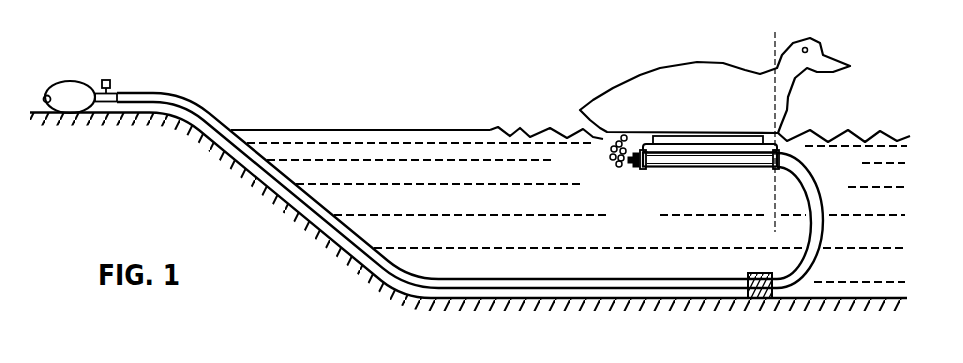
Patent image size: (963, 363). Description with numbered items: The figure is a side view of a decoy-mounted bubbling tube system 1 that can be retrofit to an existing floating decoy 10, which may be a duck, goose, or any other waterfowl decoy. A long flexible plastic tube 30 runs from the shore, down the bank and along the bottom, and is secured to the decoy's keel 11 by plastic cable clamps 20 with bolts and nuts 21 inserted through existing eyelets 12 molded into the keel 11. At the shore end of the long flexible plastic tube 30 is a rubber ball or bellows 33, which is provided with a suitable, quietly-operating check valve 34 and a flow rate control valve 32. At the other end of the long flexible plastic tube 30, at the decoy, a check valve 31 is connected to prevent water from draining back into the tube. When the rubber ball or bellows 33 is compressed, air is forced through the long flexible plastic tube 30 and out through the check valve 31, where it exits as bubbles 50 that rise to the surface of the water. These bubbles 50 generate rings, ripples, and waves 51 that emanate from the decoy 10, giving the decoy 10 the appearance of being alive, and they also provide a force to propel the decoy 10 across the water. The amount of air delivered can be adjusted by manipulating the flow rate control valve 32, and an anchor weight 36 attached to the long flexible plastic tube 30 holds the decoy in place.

The bubbling tube system 1 is at (220, 93).
The floating decoy 10 is at (665, 67).
The keel 11 is at (780, 148).
The eyelets 12 is at (781, 158).
The plastic cable clamps 20 is at (643, 168).
The bolts and nuts 21 is at (646, 153).
The long flexible plastic tube 30 is at (143, 95).
The check valve 31 is at (631, 170).
The flow rate control valve 32 is at (109, 80).
The rubber ball or bellows 33 is at (69, 82).
The check valve 34 is at (46, 97).
The anchor weight 36 is at (751, 273).
The bubbles 50 is at (608, 157).
The rings, ripples, and waves 51 is at (547, 131).